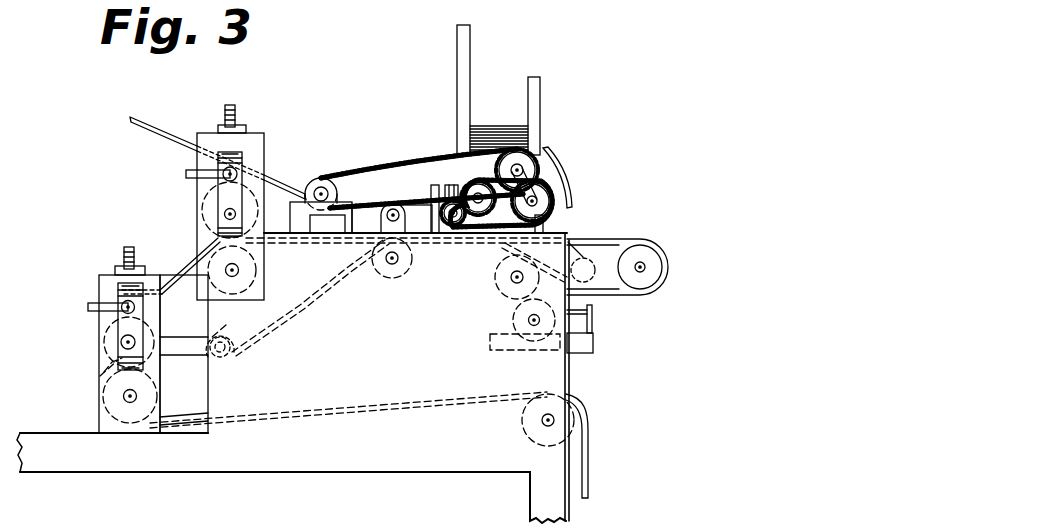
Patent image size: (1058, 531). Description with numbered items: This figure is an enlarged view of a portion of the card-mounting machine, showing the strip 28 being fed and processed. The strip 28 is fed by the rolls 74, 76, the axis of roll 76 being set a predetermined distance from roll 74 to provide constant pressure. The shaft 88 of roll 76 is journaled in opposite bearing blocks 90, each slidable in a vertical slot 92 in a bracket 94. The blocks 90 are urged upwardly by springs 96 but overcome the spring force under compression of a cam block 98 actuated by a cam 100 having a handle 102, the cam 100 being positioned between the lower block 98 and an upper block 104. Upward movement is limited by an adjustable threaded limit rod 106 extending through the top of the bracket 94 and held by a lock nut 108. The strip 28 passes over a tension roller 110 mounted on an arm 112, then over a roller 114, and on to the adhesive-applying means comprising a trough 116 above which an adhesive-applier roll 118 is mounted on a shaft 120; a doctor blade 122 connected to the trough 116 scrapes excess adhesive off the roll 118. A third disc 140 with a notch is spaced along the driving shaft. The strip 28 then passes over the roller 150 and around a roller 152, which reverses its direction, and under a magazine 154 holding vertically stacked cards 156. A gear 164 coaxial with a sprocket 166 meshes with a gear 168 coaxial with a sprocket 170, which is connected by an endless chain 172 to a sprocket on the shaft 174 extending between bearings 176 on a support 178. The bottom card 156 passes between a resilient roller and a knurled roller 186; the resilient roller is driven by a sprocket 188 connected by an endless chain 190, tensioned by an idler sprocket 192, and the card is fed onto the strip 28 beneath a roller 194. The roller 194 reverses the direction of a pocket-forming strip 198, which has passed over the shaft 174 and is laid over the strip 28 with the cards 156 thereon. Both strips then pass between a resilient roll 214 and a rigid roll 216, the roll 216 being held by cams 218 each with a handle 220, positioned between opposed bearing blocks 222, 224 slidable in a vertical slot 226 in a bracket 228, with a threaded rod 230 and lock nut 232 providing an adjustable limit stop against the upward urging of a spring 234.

The strip 28 is at (412, 410).
The roll 74 is at (127, 418).
The roll 76 is at (104, 366).
The shaft 88 is at (120, 344).
The bearing blocks 90 is at (118, 332).
The vertical slot 92 is at (112, 280).
The bracket 94 is at (99, 283).
The springs 96 is at (120, 378).
The cam block 98 is at (125, 320).
The cam 100 is at (143, 310).
The handle 102 is at (110, 306).
The upper block 104 is at (152, 278).
The threaded limit rod 106 is at (130, 247).
The lock nut 108 is at (120, 280).
The tension roller 110 is at (235, 340).
The arm 112 is at (181, 347).
The roller 114 is at (384, 268).
The trough 116 is at (580, 345).
The adhesive-applier roll 118 is at (512, 310).
The shaft 120 is at (534, 326).
The doctor blade 122 is at (592, 318).
The third disc 140 is at (498, 288).
The roller 150 is at (598, 290).
The roller 152 is at (662, 266).
The magazine 154 is at (538, 92).
The cards 156 is at (520, 125).
The gear 164 is at (536, 192).
The sprocket 166 is at (549, 203).
The gear 168 is at (550, 172).
The sprocket 170 is at (521, 167).
The endless chain 172 is at (413, 168).
The shaft 174 is at (322, 190).
The bearings 176 is at (333, 196).
The support 178 is at (343, 228).
The knurled roller 186 is at (452, 183).
The sprocket 188 is at (456, 226).
The endless chain 190 is at (556, 220).
The idler sprocket 192 is at (481, 180).
The roller 194 is at (403, 218).
The pocket-forming strip 198 is at (158, 126).
The roll 214 is at (234, 286).
The roll 216 is at (262, 252).
The cams 218 is at (221, 164).
The handle 220 is at (186, 173).
The bearing block 222 is at (240, 186).
The bearing block 224 is at (241, 167).
The vertical slot 226 is at (222, 152).
The bracket 228 is at (257, 288).
The threaded rod 230 is at (232, 105).
The lock nut 232 is at (246, 126).
The spring 234 is at (221, 231).